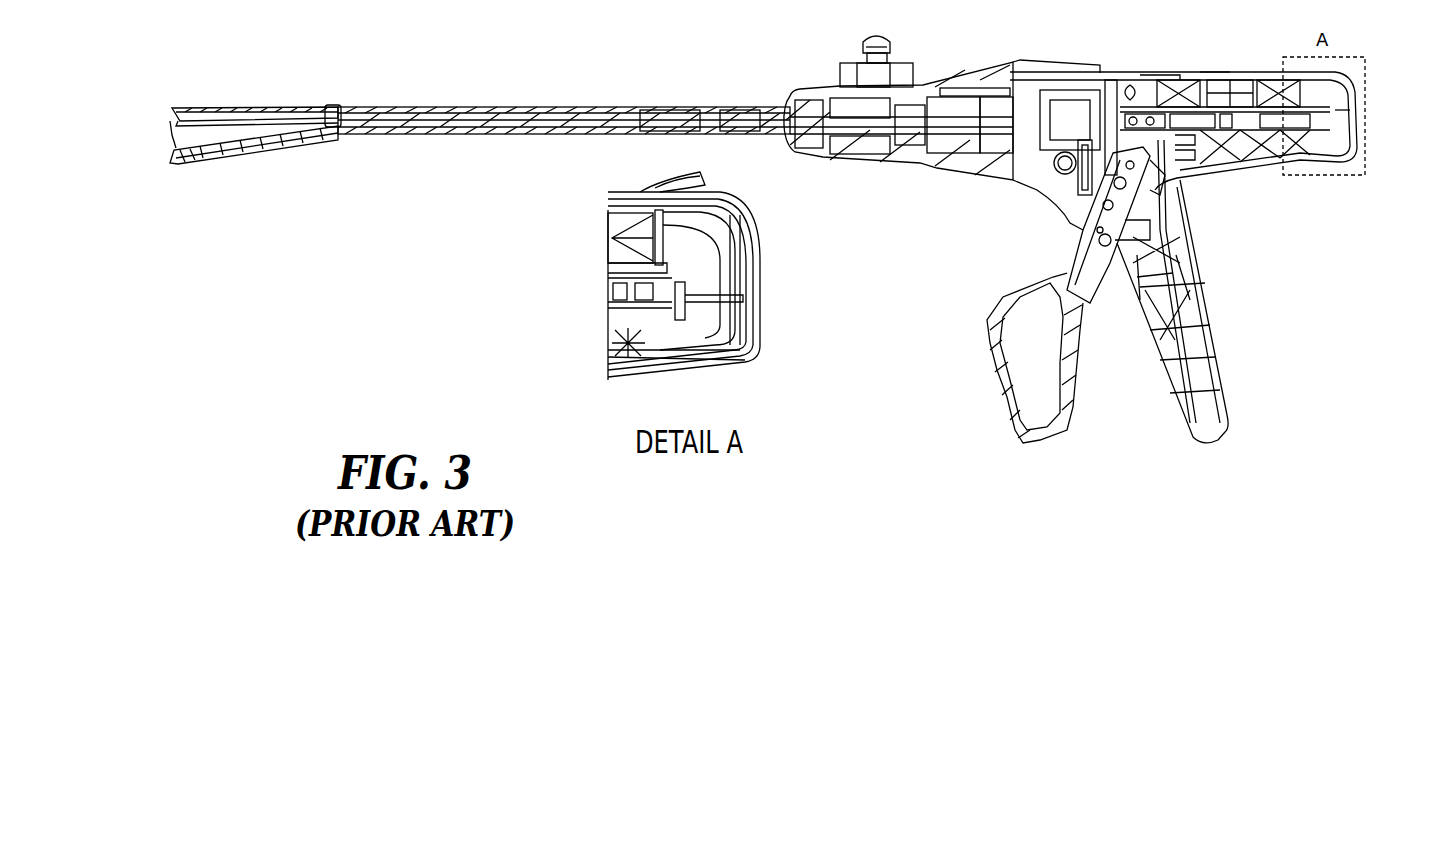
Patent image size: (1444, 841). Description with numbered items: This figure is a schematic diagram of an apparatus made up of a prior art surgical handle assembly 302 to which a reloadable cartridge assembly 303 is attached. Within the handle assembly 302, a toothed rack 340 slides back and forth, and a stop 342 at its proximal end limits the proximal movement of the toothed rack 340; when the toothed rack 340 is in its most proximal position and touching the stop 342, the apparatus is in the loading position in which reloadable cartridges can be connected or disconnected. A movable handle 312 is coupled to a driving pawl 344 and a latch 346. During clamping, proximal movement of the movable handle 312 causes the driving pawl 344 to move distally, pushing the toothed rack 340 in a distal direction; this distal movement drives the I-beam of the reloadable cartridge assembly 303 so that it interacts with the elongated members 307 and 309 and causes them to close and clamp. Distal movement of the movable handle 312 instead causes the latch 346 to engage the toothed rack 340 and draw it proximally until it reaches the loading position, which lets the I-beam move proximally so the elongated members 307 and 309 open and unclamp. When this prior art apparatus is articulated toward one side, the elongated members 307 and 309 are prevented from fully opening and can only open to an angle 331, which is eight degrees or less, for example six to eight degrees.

The surgical handle assembly 302 is at (1240, 170).
The reloadable cartridge assembly 303 is at (540, 107).
The elongated member 307 is at (212, 145).
The elongated member 309 is at (218, 107).
The movable handle 312 is at (995, 375).
The angle 331 is at (170, 135).
The toothed rack 340 is at (1200, 72).
The stop 342 is at (1358, 110).
The driving pawl 344 is at (1093, 130).
The latch 346 is at (1117, 133).